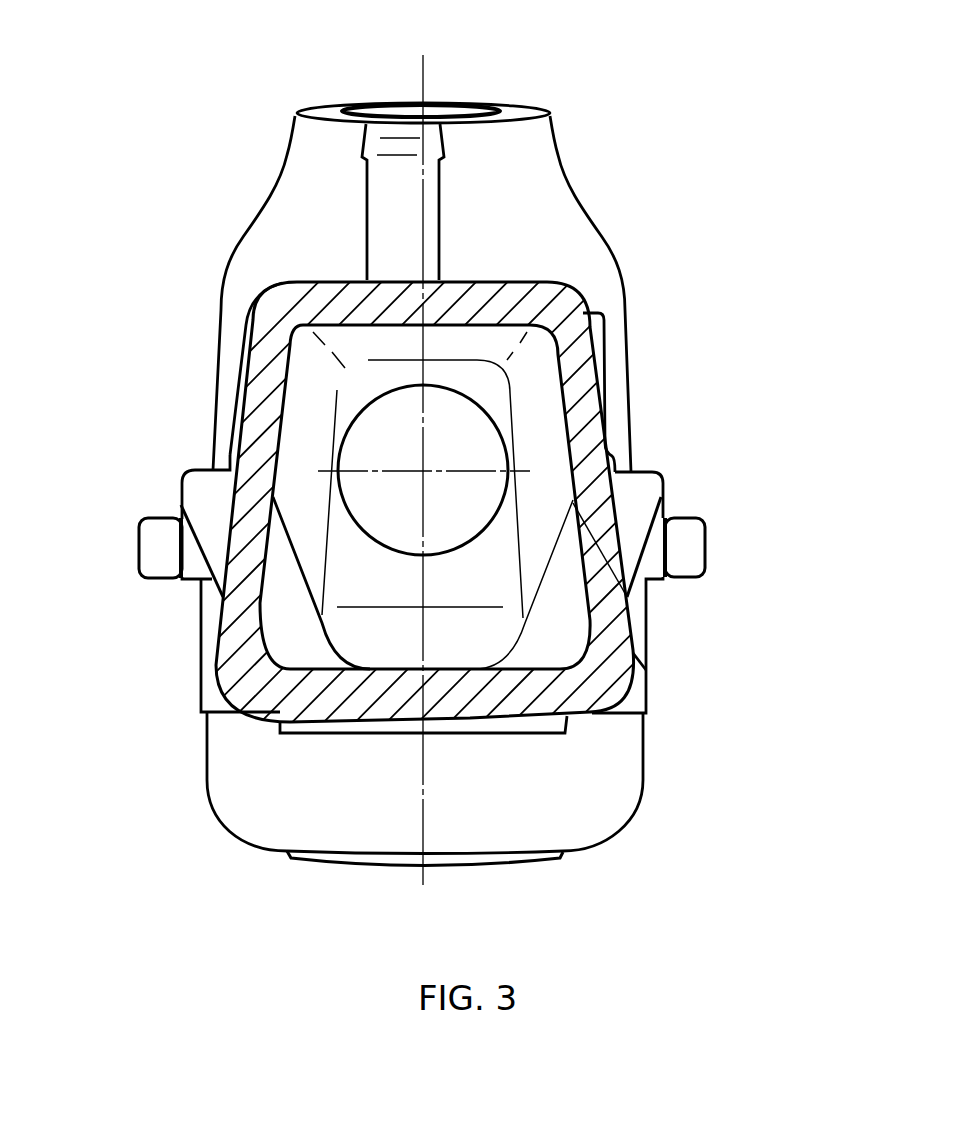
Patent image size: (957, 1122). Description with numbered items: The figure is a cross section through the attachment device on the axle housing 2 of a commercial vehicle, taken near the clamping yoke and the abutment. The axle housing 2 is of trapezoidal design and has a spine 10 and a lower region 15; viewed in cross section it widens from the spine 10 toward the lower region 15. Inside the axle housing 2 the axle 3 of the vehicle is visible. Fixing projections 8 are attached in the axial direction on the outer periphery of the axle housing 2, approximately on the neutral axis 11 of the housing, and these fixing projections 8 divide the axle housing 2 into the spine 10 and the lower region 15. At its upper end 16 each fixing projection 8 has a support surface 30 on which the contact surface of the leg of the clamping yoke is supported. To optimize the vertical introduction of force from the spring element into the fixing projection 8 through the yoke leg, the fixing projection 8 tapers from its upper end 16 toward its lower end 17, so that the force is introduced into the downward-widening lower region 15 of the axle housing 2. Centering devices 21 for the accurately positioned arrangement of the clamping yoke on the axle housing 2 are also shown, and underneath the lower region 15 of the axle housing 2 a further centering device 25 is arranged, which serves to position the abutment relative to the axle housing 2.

The axle housing 2 is at (498, 287).
The spine 10 is at (545, 278).
The axle 3 is at (397, 458).
The fixing projection 8 is at (679, 495).
The neutral axis 11 is at (177, 495).
The lower region 15 is at (580, 730).
The upper end 16 is at (147, 469).
The lower end 17 is at (199, 585).
The centering device 21 is at (133, 543).
The centering device 25 is at (186, 691).
The support surface 30 is at (194, 458).